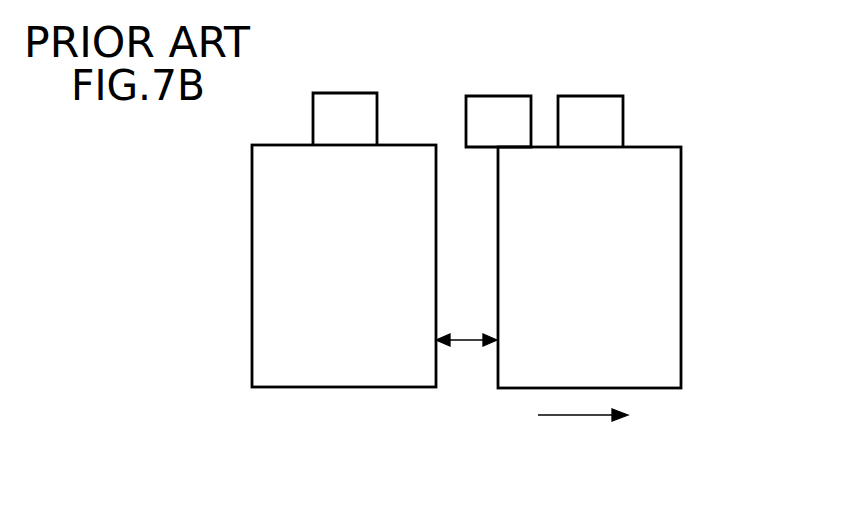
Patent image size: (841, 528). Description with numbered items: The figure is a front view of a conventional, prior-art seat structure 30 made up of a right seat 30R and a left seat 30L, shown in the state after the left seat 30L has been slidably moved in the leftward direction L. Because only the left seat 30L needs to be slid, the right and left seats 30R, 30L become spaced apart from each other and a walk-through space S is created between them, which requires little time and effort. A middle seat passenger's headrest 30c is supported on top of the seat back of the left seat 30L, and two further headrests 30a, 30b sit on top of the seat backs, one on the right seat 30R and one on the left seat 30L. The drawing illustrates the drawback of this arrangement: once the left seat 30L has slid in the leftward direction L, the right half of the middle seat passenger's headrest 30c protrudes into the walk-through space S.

The seat structure 30 is at (697, 137).
The right seat 30R is at (268, 307).
The left seat 30L is at (668, 318).
The terminal / tab 30a is at (596, 110).
The terminal / tab 30b is at (351, 108).
The middle seat passenger's headrest 30c is at (515, 110).
The walk-through space S is at (465, 343).
The leftward direction L is at (585, 418).